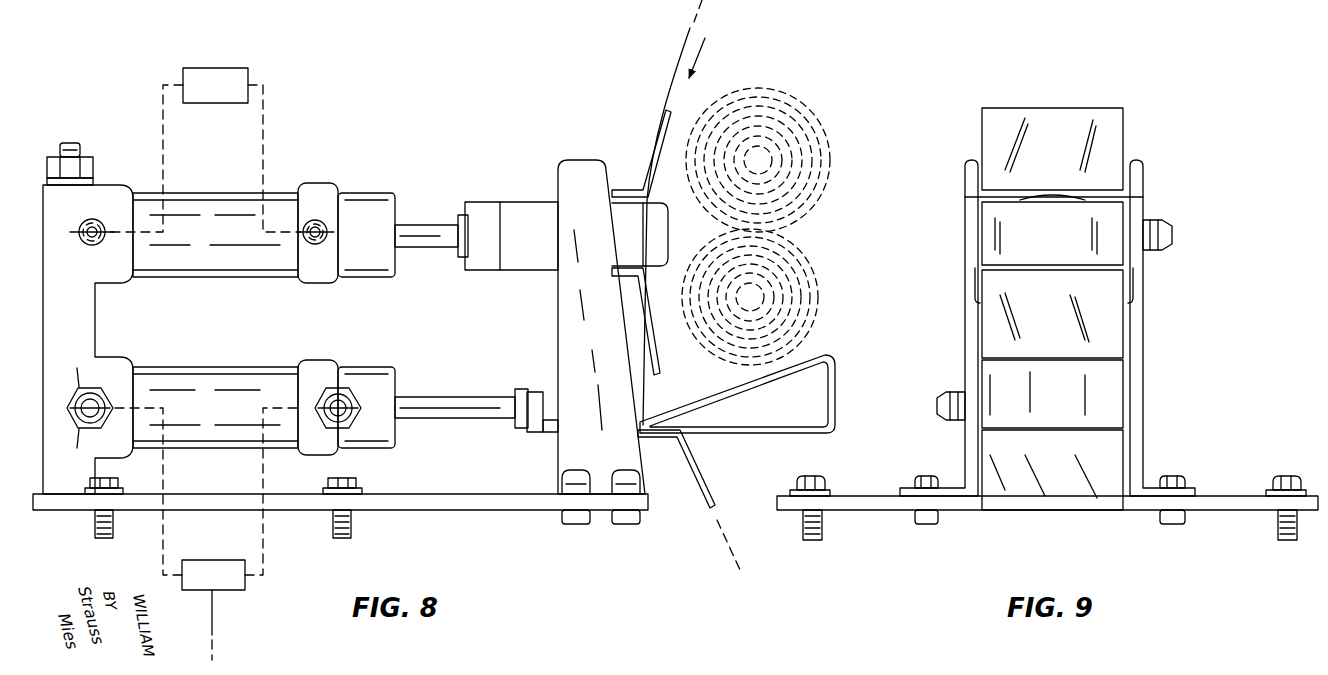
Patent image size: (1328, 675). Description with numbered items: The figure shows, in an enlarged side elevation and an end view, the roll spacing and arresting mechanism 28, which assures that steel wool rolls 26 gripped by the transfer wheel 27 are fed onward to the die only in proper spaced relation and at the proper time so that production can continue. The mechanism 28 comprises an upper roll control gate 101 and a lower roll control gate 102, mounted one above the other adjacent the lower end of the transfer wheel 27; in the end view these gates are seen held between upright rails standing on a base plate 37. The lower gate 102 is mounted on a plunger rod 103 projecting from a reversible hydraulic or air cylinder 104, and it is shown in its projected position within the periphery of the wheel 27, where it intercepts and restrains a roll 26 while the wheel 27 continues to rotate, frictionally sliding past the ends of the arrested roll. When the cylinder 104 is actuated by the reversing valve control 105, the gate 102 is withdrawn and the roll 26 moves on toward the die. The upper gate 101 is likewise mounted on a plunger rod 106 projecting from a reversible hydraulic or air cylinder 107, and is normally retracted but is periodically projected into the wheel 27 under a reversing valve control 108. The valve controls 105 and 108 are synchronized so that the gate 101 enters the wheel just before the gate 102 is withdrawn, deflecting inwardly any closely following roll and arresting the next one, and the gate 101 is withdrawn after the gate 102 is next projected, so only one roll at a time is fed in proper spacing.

In FIG. 8, the steel wool roll 26 is at (770, 169).
In FIG. 8, the transfer wheel 27 is at (668, 75).
In FIG. 8, the roll spacing and arresting mechanism 28 is at (428, 145).
In FIG. 9, the roll spacing and arresting mechanism 28 is at (1143, 143).
In FIG. 8, the base plate 37 is at (523, 500).
In FIG. 9, the base plate 37 is at (877, 505).
In FIG. 8, the upper roll control gate 101 is at (652, 242).
In FIG. 9, the upper roll control gate 101 is at (1063, 244).
In FIG. 8, the lower roll control gate 102 is at (810, 378).
In FIG. 9, the lower roll control gate 102 is at (1061, 415).
In FIG. 8, the plunger rod 103 is at (468, 380).
In FIG. 8, the reversible hydraulic or air cylinder 104 is at (223, 377).
In FIG. 8, the reversing valve control 105 is at (222, 583).
In FIG. 8, the plunger rod 106 is at (423, 232).
In FIG. 8, the reversible hydraulic or air cylinder 107 is at (233, 268).
In FIG. 8, the reversing valve control 108 is at (225, 73).